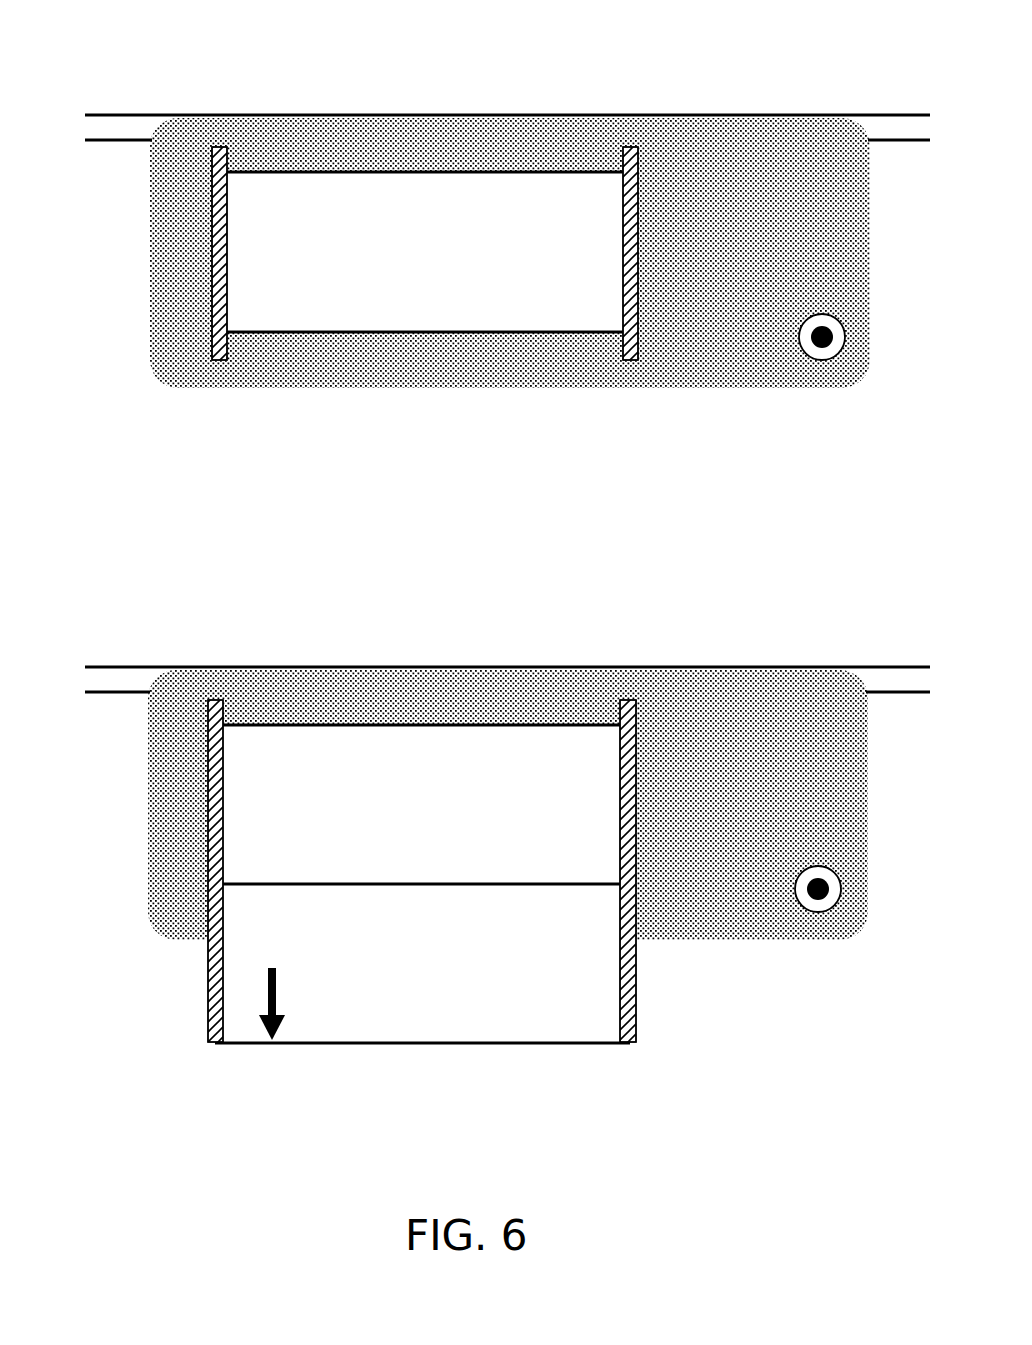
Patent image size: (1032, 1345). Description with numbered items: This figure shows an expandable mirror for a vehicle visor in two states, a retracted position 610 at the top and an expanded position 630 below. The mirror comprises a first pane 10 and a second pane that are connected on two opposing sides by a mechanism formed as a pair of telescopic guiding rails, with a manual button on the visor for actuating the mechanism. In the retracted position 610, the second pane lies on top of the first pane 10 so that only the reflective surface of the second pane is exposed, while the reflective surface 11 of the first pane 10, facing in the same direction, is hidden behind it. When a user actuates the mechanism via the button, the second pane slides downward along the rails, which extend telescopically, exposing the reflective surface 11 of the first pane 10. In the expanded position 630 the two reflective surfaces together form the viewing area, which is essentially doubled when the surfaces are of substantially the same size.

The retracted position 610 is at (168, 38).
The expanded position 630 is at (152, 620).
The first pane 10 is at (426, 720).
The reflective surface 11 is at (421, 805).